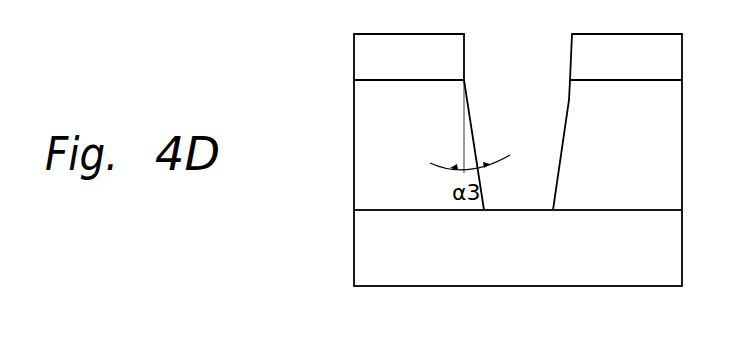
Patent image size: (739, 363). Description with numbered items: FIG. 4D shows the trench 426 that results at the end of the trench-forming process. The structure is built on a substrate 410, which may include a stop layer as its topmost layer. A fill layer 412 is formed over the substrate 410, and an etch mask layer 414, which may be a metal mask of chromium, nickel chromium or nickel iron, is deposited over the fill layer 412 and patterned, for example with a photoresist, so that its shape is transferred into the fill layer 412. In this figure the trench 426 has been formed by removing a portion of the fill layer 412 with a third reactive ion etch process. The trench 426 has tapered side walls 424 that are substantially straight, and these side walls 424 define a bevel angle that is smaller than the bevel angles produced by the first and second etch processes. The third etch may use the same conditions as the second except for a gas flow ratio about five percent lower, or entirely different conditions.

The substrate 410 is at (542, 255).
The fill layer 412 is at (410, 157).
The etch mask layer 414 is at (428, 67).
The tapered side walls 424 is at (469, 112).
The trench 426 is at (514, 113).